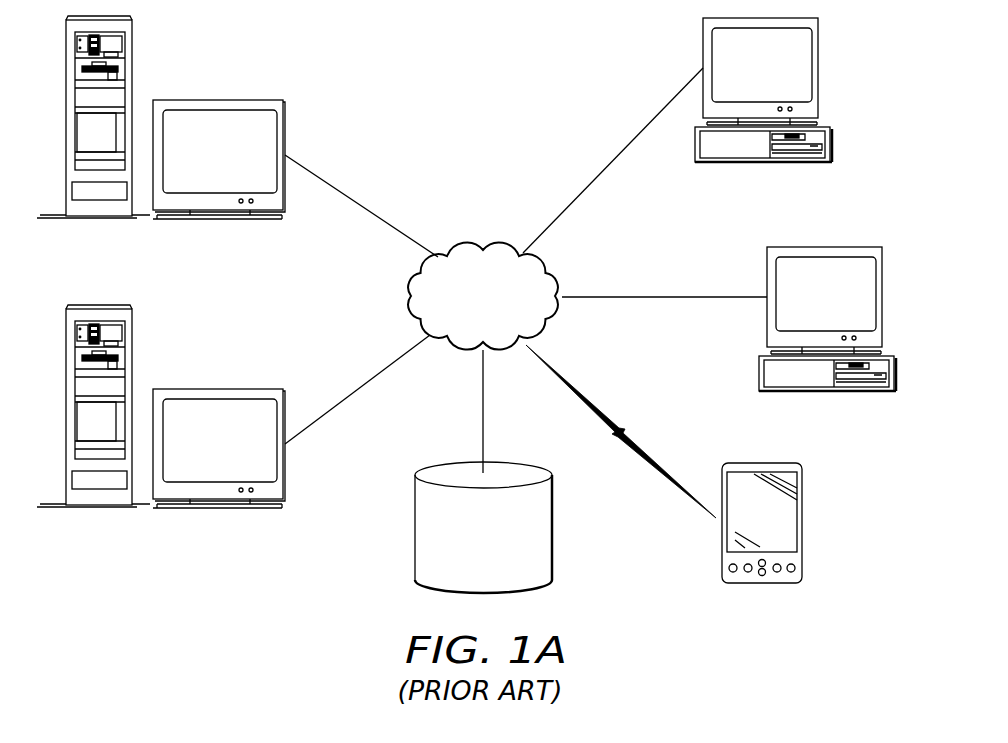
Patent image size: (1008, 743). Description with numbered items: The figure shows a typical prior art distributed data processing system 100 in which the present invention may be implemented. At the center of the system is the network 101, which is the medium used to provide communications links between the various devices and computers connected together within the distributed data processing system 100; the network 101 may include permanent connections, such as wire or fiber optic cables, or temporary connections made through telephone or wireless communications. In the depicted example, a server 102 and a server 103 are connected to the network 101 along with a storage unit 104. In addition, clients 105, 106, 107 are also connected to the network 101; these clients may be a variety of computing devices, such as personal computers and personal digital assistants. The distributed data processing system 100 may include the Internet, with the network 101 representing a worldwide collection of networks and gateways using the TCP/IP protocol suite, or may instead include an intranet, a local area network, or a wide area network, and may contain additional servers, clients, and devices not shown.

The distributed data processing system 100 is at (546, 60).
The network 101 is at (505, 326).
The server 102 is at (245, 453).
The server 103 is at (245, 164).
The storage unit 104 is at (510, 572).
The client 105 is at (742, 77).
The client 106 is at (806, 306).
The client 107 is at (803, 523).